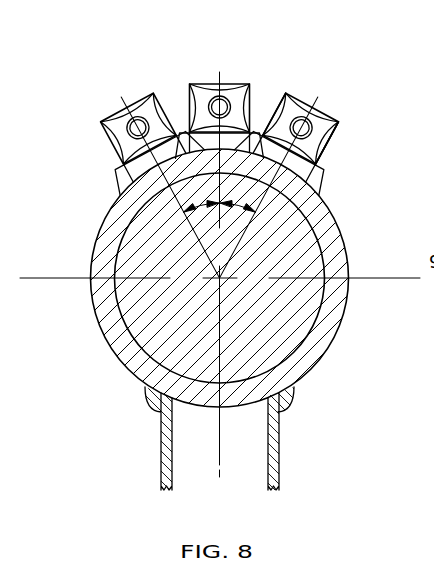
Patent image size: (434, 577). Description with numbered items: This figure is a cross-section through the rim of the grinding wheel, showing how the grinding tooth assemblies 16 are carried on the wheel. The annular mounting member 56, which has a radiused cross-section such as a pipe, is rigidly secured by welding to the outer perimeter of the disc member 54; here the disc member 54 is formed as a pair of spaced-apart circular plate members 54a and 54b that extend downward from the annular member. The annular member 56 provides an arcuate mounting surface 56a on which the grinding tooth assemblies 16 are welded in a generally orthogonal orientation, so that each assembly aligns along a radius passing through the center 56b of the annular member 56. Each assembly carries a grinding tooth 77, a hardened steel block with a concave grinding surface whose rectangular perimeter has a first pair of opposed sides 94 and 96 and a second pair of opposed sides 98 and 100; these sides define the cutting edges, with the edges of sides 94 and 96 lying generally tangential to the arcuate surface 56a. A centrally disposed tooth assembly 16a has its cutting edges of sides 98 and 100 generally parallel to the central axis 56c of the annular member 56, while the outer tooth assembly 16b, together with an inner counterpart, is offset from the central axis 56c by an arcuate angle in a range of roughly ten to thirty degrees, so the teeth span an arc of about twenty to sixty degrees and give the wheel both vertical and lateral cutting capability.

The grinding tooth assembly 16 is at (232, 146).
The centrally disposed grinding tooth assembly 16a is at (200, 84).
The outer grinding tooth assembly 16b is at (192, 165).
The first side of rectangular perimeter 94 is at (302, 103).
The opposed first side of rectangular perimeter 96 is at (216, 161).
The second side of rectangular perimeter 98 is at (278, 110).
The opposed second side of rectangular perimeter 100 is at (332, 143).
The grinding tooth 77 is at (358, 113).
The annular mounting member 56 is at (217, 274).
The arcuate mounting surface 56a is at (332, 217).
The center of annular member 56b is at (224, 275).
The central axis of annular member 56c is at (224, 353).
The disc member 54 is at (225, 449).
The circular plate member 54a is at (160, 453).
The circular plate member 54b is at (282, 477).